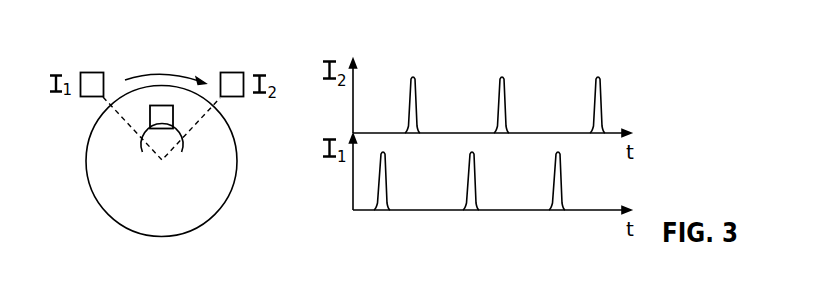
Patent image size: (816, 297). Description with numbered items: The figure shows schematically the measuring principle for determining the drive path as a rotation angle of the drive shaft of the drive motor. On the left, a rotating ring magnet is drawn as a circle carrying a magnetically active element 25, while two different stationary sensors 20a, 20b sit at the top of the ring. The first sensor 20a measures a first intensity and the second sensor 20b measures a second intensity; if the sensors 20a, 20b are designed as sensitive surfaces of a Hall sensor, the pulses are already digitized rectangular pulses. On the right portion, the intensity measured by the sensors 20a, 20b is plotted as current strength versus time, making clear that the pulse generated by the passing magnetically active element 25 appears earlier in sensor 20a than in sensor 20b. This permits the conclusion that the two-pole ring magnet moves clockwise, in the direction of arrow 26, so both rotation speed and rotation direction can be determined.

The first sensor 20a is at (91, 72).
The second sensor 20b is at (233, 72).
The magnetically active element 25 is at (150, 113).
The arrow 26 is at (160, 73).